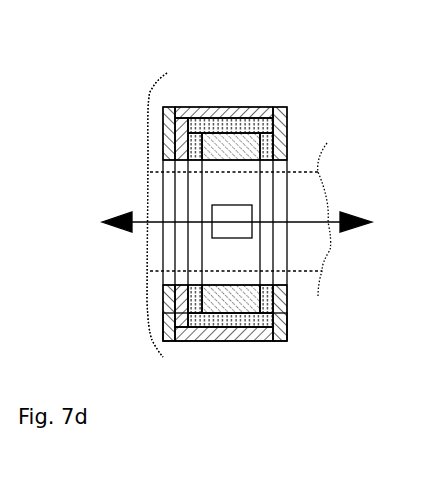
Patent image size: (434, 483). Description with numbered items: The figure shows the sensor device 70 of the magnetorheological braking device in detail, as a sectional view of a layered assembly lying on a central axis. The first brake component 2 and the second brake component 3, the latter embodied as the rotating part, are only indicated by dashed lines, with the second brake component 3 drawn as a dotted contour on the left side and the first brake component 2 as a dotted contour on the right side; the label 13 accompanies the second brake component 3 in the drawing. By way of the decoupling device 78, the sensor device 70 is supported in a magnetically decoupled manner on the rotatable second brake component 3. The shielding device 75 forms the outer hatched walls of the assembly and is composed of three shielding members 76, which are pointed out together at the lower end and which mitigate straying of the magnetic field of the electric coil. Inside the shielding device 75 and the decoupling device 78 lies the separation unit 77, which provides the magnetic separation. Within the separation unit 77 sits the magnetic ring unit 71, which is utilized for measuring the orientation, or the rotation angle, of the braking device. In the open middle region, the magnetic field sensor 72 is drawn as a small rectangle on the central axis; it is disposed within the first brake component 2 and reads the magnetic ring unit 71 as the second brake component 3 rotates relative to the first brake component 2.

The sensor device 70 is at (314, 66).
The shielding device 75 is at (297, 348).
The decoupling device 78 is at (163, 341).
The separation unit 77 is at (203, 123).
The magnetic ring unit 71 is at (245, 148).
The magnetic field sensor 72 is at (235, 217).
The shielding members 76 is at (277, 343).
The first brake component 2 is at (318, 260).
The second brake component 3 is at (153, 111).
The partition wall 13 is at (142, 195).